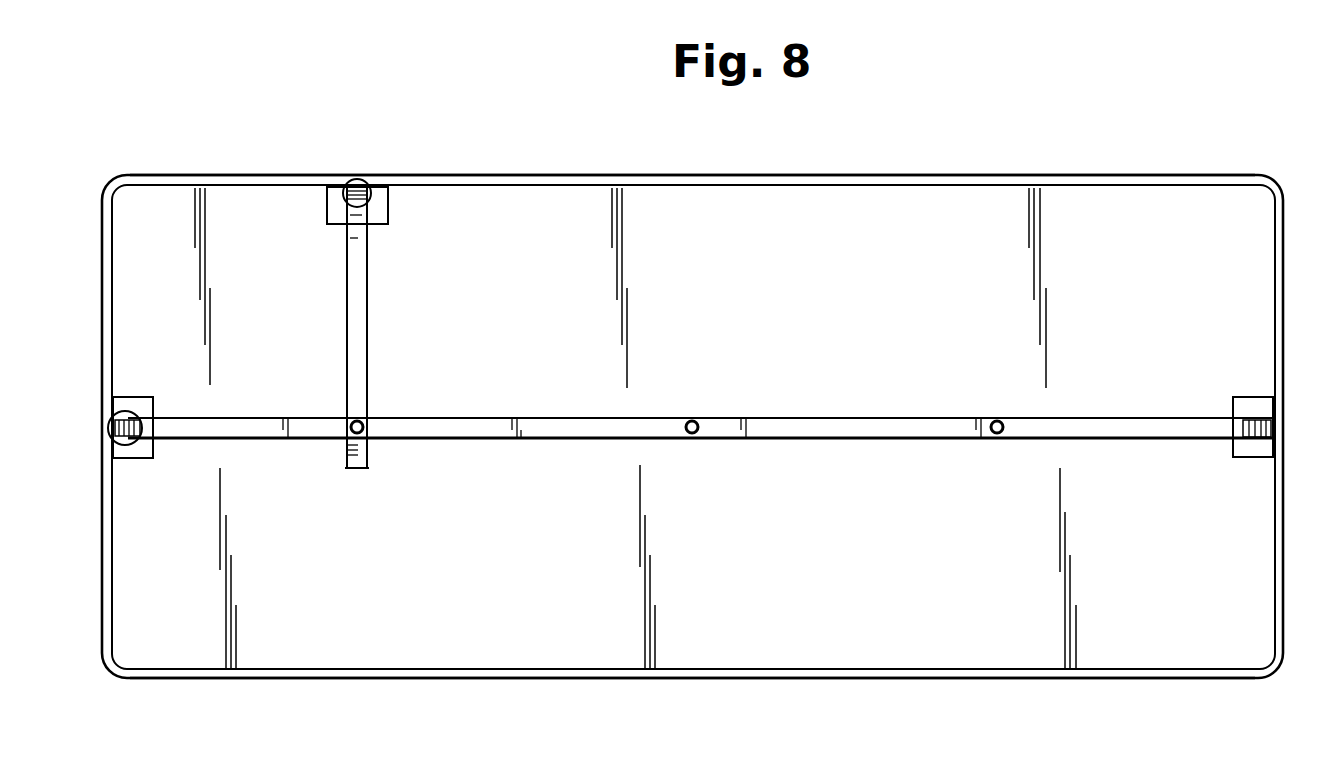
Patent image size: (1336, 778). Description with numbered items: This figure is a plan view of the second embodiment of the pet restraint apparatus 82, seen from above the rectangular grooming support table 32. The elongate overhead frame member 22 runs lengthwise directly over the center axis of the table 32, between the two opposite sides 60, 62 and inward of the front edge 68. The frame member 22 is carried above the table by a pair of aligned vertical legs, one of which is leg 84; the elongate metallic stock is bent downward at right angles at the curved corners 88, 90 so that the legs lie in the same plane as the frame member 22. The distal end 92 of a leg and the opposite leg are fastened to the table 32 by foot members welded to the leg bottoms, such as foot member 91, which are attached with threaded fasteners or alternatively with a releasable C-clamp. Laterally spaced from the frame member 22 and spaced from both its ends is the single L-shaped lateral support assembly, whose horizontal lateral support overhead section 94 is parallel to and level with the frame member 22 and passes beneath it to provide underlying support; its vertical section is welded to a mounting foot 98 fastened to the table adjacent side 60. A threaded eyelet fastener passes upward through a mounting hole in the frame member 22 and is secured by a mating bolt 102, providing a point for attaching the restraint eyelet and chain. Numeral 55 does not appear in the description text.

The overhead frame member 22 is at (562, 417).
The grooming support table 32 is at (773, 632).
The bracket base 55 is at (123, 458).
The side of the table 60 is at (225, 175).
The side of the table 62 is at (405, 680).
The front edge 68 is at (102, 627).
The pet restraint apparatus 82 is at (328, 200).
The leg 84 is at (108, 426).
The curved corner 88 is at (140, 417).
The curved corner 90 is at (1245, 415).
The foot member 91 is at (125, 400).
The distal end of leg 92 is at (1257, 400).
The lateral support overhead section 94 is at (355, 186).
The mounting foot 98 is at (380, 196).
The mating bolt 102 is at (364, 422).